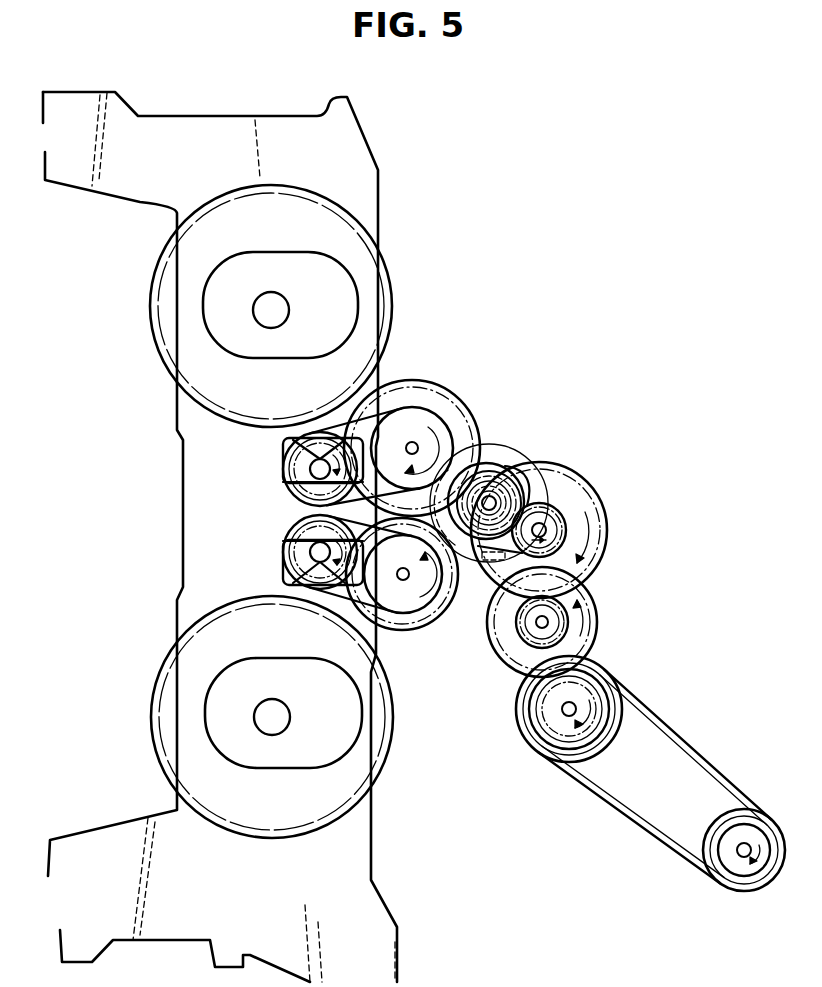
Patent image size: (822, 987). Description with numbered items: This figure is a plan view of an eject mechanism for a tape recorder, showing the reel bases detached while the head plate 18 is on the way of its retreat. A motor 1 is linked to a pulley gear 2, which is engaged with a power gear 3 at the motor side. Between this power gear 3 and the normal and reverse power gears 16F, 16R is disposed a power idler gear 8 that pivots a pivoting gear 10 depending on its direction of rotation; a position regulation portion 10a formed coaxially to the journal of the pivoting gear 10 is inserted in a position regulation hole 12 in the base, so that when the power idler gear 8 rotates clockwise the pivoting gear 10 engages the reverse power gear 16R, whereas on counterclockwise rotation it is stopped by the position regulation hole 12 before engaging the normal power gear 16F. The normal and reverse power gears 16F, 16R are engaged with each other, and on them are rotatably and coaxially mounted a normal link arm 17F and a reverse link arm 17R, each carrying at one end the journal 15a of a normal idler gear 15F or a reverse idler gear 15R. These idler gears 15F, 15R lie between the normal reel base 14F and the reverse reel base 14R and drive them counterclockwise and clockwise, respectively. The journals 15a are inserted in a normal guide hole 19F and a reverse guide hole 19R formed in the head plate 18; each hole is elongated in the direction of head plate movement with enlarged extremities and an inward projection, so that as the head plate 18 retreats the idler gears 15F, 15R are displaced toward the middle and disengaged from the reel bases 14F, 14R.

The motor 1 is at (745, 828).
The pulley gear 2 is at (584, 670).
The power gear 3 is at (583, 598).
The power idler gear 8 is at (548, 522).
The pivoting gear 10 is at (449, 550).
The position regulation portion 10a is at (484, 472).
The position regulation hole 12 is at (495, 558).
The reverse reel base 14R is at (355, 259).
The normal reel base 14F is at (347, 779).
The reverse idler gear 15R is at (316, 468).
The normal idler gear 15F is at (300, 540).
The journal 15a is at (293, 473).
The reverse power gear 16R is at (450, 402).
The normal power gear 16F is at (413, 617).
The reverse link arm 17R is at (402, 420).
The normal link arm 17F is at (360, 600).
The head plate 18 is at (378, 919).
The reverse guide hole 19R is at (300, 500).
The normal guide hole 19F is at (308, 590).